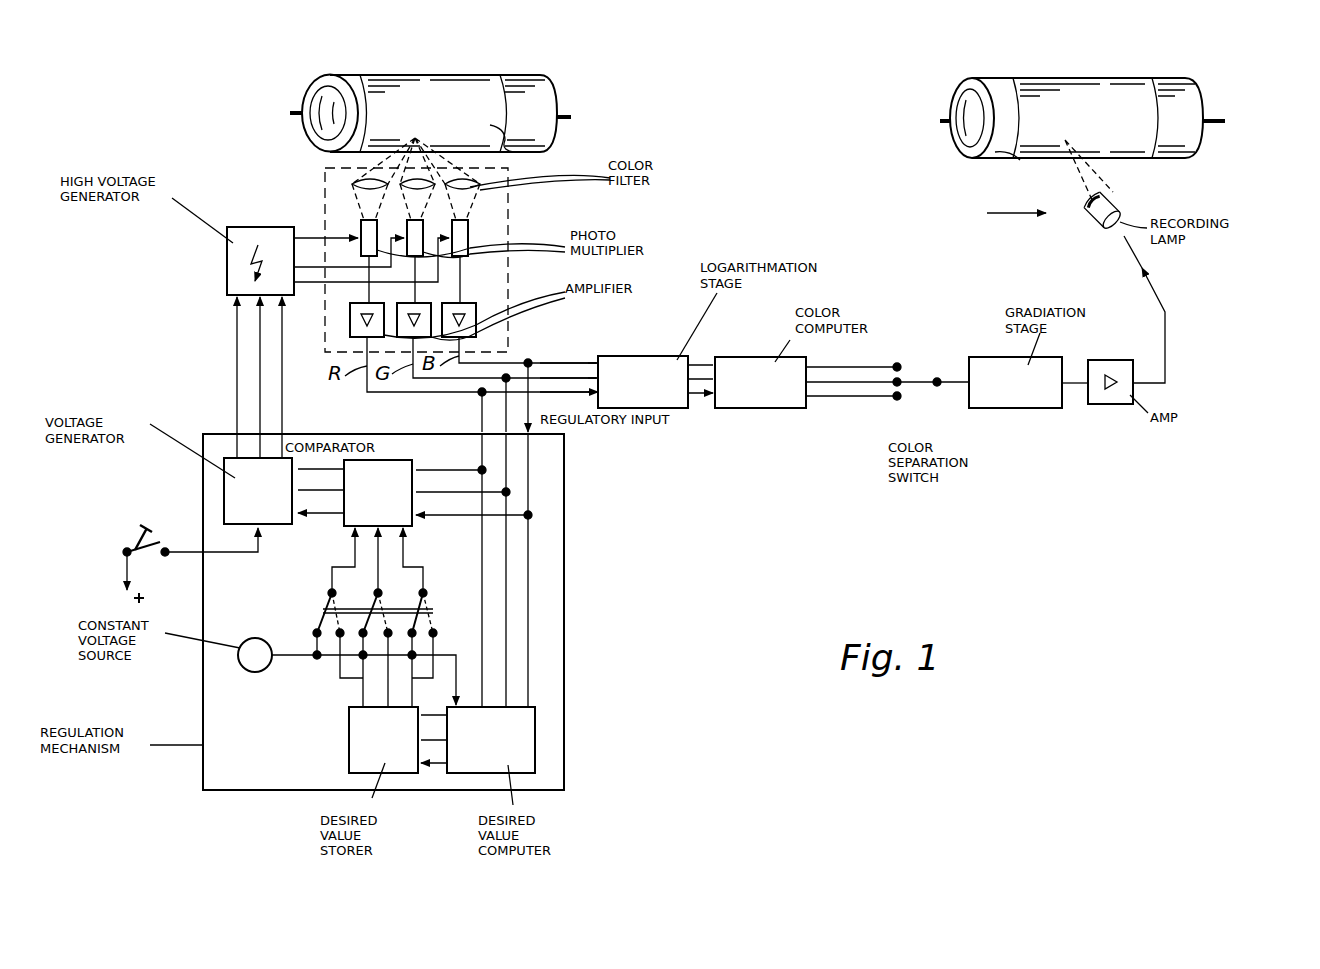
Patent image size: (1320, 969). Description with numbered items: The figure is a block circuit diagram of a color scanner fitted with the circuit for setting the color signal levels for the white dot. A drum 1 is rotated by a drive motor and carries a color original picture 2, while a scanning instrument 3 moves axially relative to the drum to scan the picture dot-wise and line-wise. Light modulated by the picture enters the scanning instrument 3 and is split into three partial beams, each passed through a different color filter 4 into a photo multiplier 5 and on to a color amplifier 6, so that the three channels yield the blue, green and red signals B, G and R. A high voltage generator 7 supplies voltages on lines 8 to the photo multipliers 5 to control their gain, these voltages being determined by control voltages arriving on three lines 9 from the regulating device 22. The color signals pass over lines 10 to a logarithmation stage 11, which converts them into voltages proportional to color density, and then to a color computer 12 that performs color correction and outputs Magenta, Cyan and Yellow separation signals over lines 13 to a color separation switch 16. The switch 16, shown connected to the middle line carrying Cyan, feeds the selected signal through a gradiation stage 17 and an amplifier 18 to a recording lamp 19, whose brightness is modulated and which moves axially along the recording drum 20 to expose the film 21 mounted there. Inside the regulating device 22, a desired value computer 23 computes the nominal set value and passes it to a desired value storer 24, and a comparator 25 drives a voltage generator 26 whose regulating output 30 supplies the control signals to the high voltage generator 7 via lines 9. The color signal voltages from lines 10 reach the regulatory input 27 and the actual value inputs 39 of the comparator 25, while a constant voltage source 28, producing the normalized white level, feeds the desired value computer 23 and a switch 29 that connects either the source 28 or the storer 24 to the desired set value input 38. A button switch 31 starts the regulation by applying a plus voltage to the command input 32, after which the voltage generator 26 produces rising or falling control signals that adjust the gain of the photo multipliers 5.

The drum 1 is at (538, 100).
The color original picture 2 is at (505, 140).
The scanning instrument 3 is at (505, 240).
The color filters 4 is at (468, 188).
The photo multipliers 5 is at (468, 238).
The color amplifiers 6 is at (465, 300).
The high voltage generator 7 is at (243, 228).
The lines 8 is at (312, 252).
The lines 9 is at (282, 378).
The lines 10 is at (565, 392).
The logarithmation stage 11 is at (645, 372).
The color computer 12 is at (752, 373).
The lines 13 is at (855, 367).
The color separation switch 16 is at (912, 385).
The gradiation stage 17 is at (997, 397).
The amplifier 18 is at (1100, 395).
The recording lamp 19 is at (1112, 210).
The drum 20 is at (1193, 110).
The film 21 is at (1036, 140).
The regulating device 22 is at (220, 690).
The desired value computer 23 is at (525, 735).
The desired value storer 24 is at (362, 737).
The comparator 25 is at (395, 478).
The voltage generator 26 is at (275, 507).
The regulatory input 27 is at (512, 428).
The constant voltage source 28 is at (252, 638).
The switch 29 is at (430, 617).
The regulating output 30 is at (282, 400).
The button switch 31 is at (143, 558).
The command input 32 is at (200, 552).
The desired set value input 38 is at (343, 575).
The actual value inputs 39 is at (420, 503).